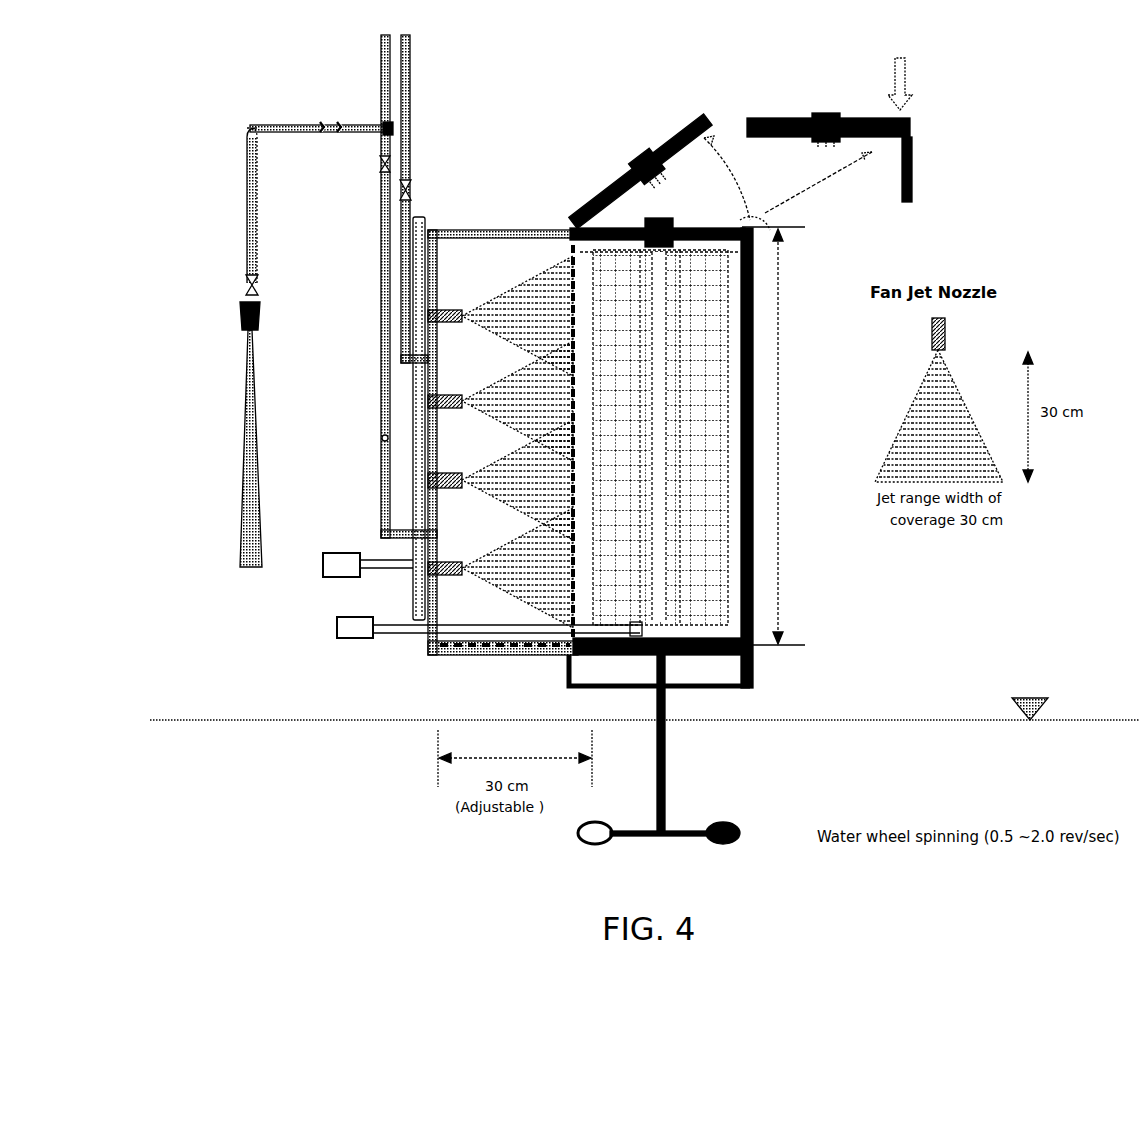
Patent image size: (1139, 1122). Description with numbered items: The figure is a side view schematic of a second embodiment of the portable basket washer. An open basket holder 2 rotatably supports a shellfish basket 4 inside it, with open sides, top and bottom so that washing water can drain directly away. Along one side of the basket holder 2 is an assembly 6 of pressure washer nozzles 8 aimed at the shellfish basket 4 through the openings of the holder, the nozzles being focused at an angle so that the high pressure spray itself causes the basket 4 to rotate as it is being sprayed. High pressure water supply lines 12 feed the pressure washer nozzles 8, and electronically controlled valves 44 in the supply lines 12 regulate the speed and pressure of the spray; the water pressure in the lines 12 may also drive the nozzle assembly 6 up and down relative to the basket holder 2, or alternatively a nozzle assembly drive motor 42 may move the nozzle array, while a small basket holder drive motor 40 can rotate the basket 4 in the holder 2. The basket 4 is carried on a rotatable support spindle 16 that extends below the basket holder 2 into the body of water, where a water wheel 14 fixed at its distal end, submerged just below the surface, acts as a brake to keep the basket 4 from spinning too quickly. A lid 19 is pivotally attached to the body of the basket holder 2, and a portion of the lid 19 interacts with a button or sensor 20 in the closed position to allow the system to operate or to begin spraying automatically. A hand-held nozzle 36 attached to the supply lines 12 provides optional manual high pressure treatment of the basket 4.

The basket holder 2 is at (754, 295).
The shellfish basket 4 is at (718, 335).
The nozzle assembly 6 is at (421, 212).
The pressure washer nozzles 8 is at (247, 175).
The high pressure water supply lines 12 is at (382, 80).
The water wheel 14 is at (683, 828).
The support spindle 16 is at (667, 763).
The lid 19 is at (662, 148).
The button or sensor 20 is at (913, 132).
The nozzle 36 is at (262, 312).
The basket holder drive motor 40 is at (358, 640).
The nozzle assembly drive motor 42 is at (340, 553).
The electronically controlled valves 44 is at (404, 188).